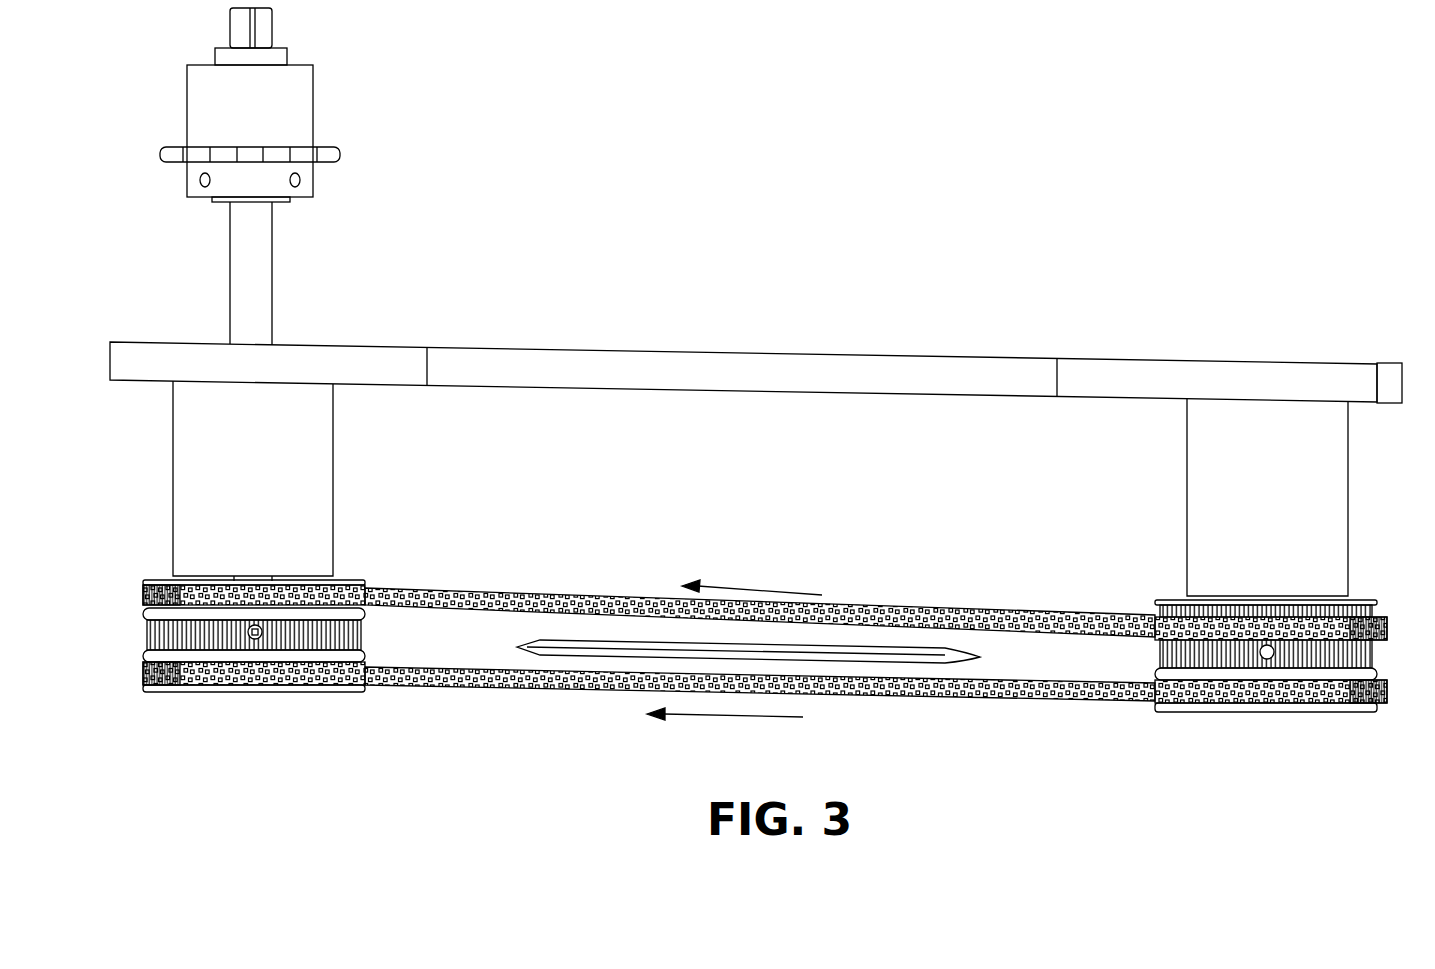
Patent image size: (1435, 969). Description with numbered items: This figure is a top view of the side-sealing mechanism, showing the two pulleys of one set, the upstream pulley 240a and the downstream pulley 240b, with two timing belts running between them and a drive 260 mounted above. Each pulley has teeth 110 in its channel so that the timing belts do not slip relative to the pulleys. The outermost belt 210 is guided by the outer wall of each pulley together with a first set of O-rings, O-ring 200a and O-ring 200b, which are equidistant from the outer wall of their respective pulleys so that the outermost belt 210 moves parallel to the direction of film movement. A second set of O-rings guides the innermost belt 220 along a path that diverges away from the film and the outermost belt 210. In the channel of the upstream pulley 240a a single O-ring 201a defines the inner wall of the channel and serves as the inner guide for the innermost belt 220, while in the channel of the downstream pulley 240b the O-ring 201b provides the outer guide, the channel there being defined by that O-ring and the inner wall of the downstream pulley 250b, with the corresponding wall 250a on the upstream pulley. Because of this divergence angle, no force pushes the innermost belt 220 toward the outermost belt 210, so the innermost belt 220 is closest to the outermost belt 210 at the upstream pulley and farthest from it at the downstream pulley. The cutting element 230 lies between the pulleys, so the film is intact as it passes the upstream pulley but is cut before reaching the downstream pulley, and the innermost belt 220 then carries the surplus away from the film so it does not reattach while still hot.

The motor 260 is at (315, 107).
The upper flange of spool a 250a is at (1173, 597).
The inner wall of the downstream pulley 250b is at (161, 579).
The O-ring 201a is at (1378, 623).
The O-ring 201b is at (145, 609).
The O-ring 200a is at (1383, 680).
The O-ring 200b is at (145, 657).
The upstream pulley 240a is at (1310, 712).
The downstream pulley 240b is at (180, 692).
The teeth 110 is at (363, 633).
The innermost belt 220 is at (938, 611).
The outermost belt 210 is at (425, 688).
The cutting element 230 is at (980, 657).